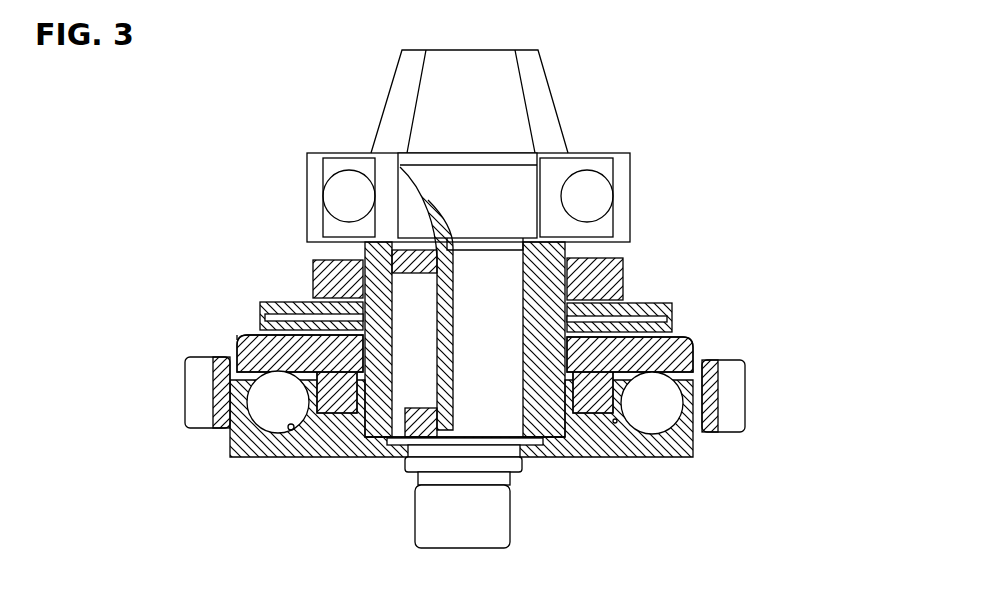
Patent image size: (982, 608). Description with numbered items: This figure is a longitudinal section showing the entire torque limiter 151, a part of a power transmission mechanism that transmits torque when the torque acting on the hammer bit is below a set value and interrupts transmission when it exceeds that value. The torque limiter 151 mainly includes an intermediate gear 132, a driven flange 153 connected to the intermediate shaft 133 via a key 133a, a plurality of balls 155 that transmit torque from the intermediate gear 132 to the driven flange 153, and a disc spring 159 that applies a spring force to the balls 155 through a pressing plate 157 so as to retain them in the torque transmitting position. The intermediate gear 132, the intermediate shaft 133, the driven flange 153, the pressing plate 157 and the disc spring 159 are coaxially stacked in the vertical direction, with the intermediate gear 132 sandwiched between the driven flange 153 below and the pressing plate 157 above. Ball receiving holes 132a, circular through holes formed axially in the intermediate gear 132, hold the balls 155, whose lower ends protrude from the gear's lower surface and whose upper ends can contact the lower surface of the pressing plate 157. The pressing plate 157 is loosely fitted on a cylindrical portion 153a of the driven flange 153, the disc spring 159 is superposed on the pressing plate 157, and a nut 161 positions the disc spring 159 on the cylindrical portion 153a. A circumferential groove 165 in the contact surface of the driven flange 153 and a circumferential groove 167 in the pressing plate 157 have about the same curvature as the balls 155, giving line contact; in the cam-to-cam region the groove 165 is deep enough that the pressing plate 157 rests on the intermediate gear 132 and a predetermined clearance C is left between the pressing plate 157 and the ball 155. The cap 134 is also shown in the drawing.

The cap 134 is at (547, 78).
The intermediate shaft 133 is at (497, 186).
The key 133a is at (428, 205).
The torque limiter 151 is at (660, 247).
The nut 161 is at (313, 260).
The disc spring 159 is at (262, 300).
The cylindrical portion 153a is at (627, 282).
The pressing plate 157 is at (237, 337).
The circumferential groove 167 is at (688, 337).
The clearance C is at (237, 337).
The intermediate gear 132 is at (748, 383).
The ball receiving hole 132a is at (615, 423).
The ball 155 is at (243, 437).
The driven flange 153 is at (267, 457).
The circumferential groove 165 is at (293, 430).